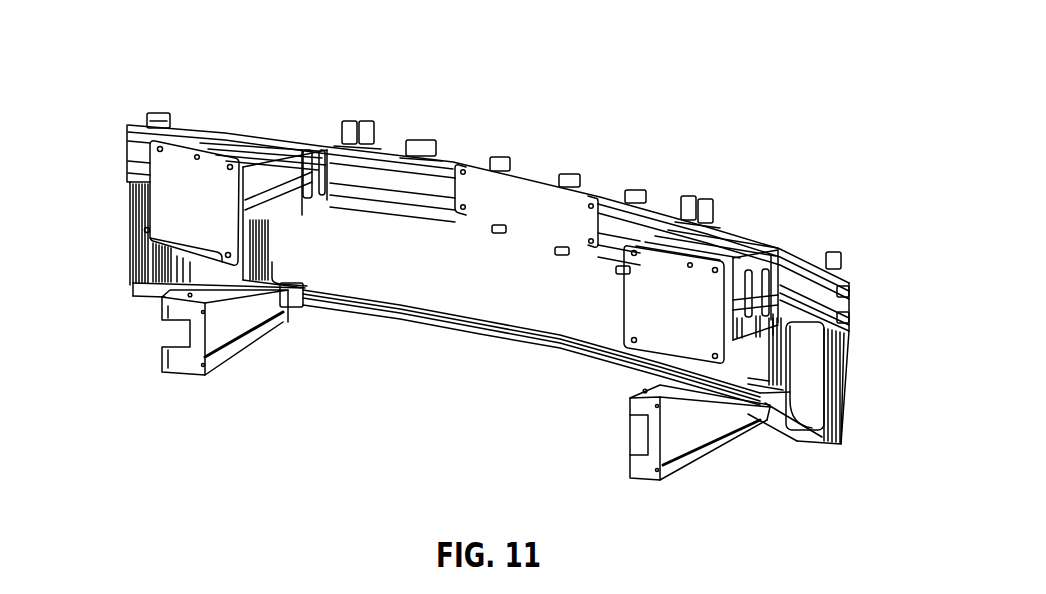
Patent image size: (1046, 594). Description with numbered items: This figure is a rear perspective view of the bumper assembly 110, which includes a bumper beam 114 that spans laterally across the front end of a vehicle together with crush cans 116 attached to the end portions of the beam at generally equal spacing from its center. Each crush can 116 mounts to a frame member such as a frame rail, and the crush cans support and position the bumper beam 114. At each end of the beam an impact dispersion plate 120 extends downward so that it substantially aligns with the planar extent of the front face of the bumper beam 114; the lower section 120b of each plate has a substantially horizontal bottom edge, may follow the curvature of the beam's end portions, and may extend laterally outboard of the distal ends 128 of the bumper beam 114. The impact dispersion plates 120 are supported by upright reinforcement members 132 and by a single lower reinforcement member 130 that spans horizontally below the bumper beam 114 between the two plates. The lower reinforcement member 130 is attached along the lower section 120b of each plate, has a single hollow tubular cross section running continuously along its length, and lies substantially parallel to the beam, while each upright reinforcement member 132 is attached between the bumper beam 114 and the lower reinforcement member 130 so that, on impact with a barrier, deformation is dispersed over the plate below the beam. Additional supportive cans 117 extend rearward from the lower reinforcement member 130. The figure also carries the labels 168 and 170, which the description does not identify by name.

The bumper assembly 110 is at (203, 72).
The bumper beam 114 is at (452, 157).
The crush cans 116 is at (318, 137).
The additional supportive cans 117 is at (229, 347).
The impact dispersion plates 120 is at (855, 420).
The lower section 120b is at (303, 308).
The distal ends 128 is at (130, 128).
The lower reinforcement member 130 is at (553, 350).
The upright reinforcement member 132 is at (147, 263).
The housing 168 is at (307, 160).
The cover plate 170 is at (183, 160).